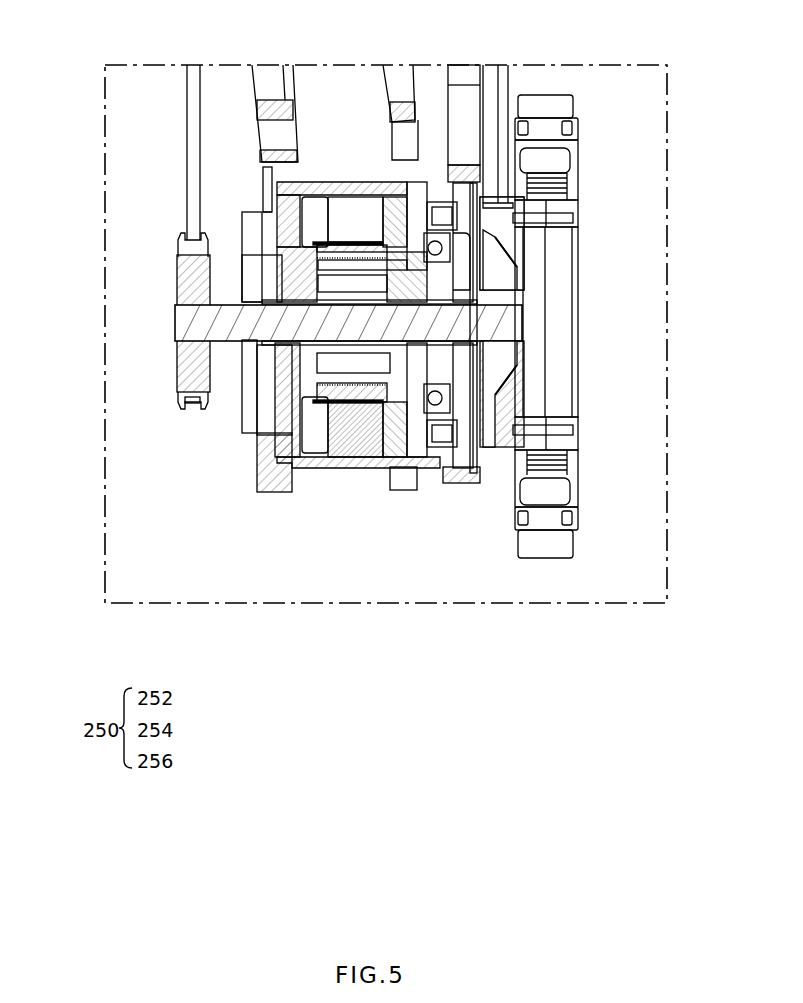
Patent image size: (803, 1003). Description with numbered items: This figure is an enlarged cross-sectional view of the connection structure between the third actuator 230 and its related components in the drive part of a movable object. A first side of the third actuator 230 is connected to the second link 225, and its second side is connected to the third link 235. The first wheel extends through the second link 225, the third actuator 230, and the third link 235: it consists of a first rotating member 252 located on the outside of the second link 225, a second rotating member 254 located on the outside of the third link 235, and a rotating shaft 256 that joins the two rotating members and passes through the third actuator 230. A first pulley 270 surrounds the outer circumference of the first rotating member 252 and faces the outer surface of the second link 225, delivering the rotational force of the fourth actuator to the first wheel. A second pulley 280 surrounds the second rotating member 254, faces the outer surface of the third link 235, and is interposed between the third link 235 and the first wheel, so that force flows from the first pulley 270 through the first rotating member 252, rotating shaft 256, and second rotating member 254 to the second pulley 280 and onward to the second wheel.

The second link 225 is at (262, 167).
The third actuator 230 is at (358, 440).
The third link 235 is at (470, 122).
The first rotating member 252 is at (187, 373).
The second rotating member 254 is at (572, 312).
The rotating shaft 256 is at (226, 330).
The first pulley 270 is at (193, 105).
The second pulley 280 is at (500, 80).